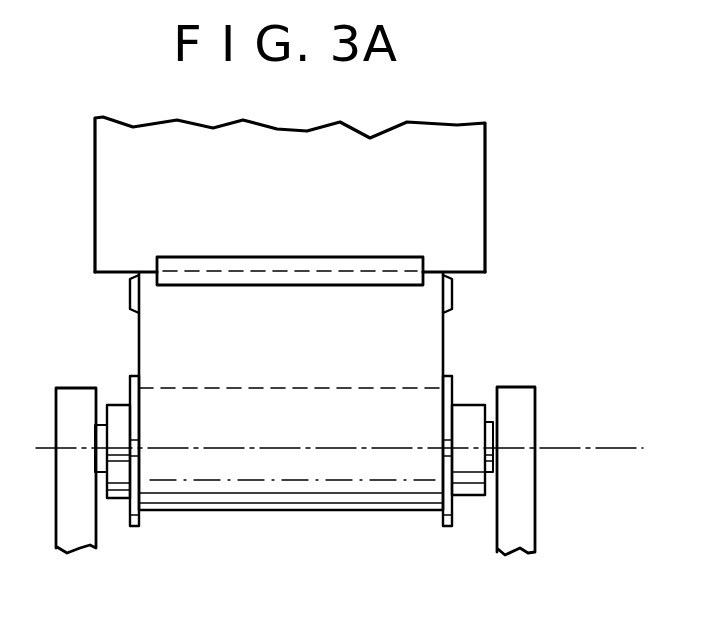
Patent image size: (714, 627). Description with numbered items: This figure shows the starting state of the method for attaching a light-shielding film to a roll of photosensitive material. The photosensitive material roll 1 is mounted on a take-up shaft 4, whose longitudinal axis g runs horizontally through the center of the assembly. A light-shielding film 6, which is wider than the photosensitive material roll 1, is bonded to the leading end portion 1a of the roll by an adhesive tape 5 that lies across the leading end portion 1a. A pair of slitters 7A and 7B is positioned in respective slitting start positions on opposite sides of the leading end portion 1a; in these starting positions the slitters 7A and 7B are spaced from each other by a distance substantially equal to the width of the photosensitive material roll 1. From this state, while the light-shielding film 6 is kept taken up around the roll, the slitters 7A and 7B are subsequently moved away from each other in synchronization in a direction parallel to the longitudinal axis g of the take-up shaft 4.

The light-shielding film 6 is at (463, 193).
The adhesive tape 5 is at (383, 279).
The slitter 7A is at (455, 290).
The slitter 7B is at (128, 292).
The leading end portion 1a is at (240, 295).
The photosensitive material roll 1 is at (373, 485).
The take-up shaft 4 is at (492, 437).
The longitudinal axis g is at (600, 449).